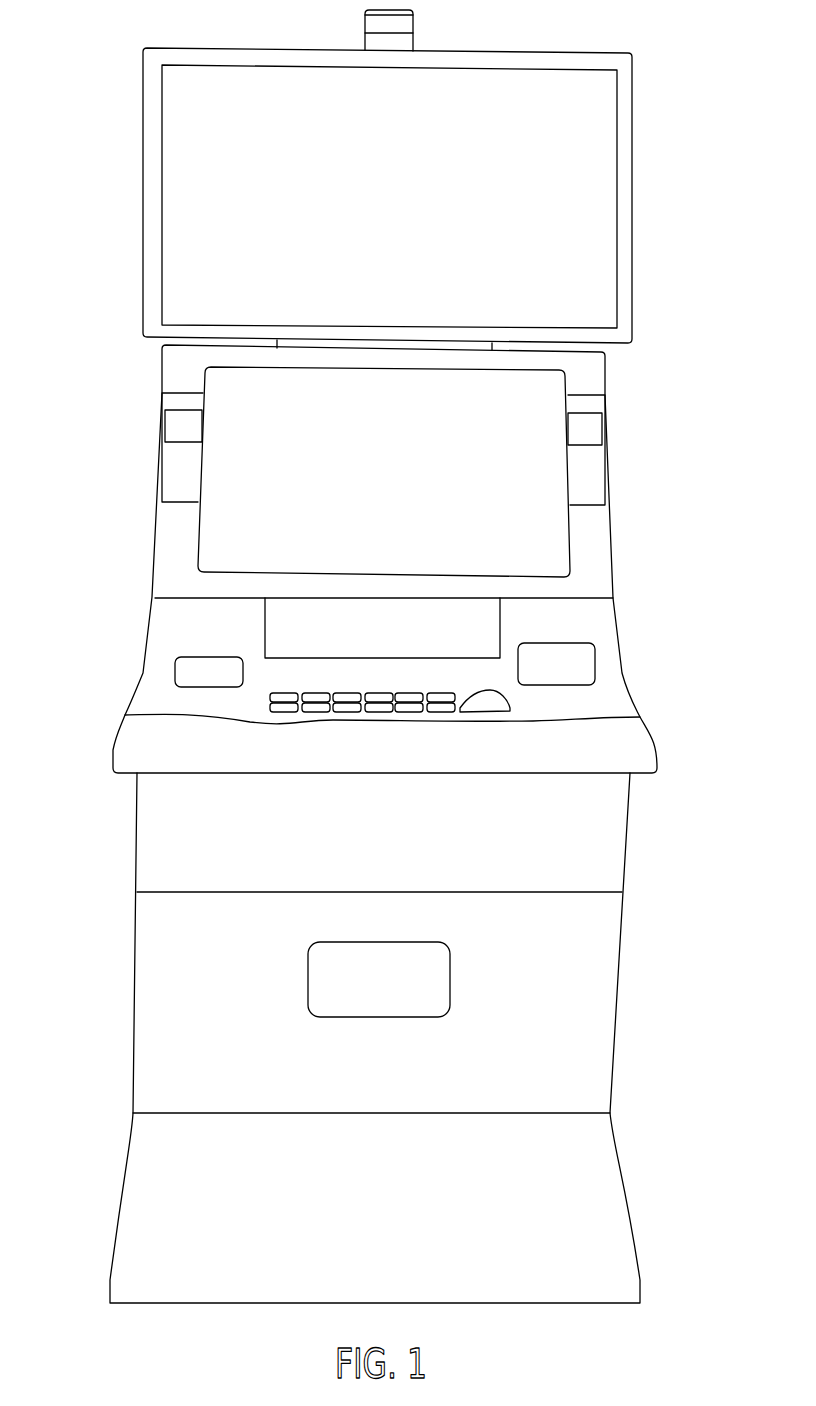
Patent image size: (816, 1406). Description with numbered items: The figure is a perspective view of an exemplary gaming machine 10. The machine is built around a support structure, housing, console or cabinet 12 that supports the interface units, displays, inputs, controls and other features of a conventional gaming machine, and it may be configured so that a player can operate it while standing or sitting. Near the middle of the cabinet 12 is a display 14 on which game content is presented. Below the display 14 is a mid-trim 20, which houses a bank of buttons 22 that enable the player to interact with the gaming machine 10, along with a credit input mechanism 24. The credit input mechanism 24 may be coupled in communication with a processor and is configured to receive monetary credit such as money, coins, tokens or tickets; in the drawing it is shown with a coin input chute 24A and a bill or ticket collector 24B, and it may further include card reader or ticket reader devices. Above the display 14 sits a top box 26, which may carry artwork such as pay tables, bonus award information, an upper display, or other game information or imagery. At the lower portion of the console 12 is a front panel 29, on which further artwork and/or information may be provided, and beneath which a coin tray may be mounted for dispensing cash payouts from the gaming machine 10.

The gaming machine 10 is at (693, 132).
The cabinet 12 is at (610, 538).
The display 14 is at (257, 463).
The mid-trim 20 is at (122, 728).
The bank of buttons 22 is at (325, 715).
The credit input mechanism 24 is at (595, 643).
The coin input chute 24A is at (512, 703).
The bill or ticket collector 24B is at (593, 658).
The top box 26 is at (155, 168).
The front panel 29 is at (555, 983).